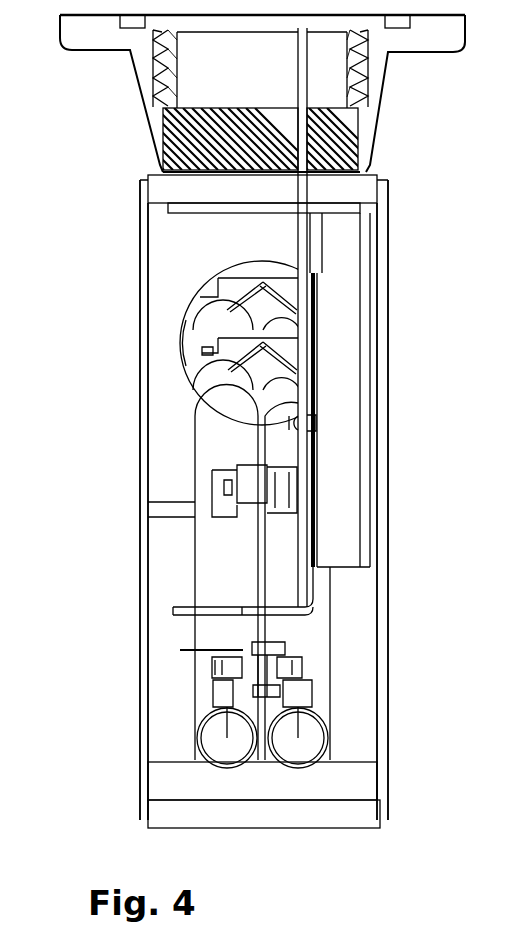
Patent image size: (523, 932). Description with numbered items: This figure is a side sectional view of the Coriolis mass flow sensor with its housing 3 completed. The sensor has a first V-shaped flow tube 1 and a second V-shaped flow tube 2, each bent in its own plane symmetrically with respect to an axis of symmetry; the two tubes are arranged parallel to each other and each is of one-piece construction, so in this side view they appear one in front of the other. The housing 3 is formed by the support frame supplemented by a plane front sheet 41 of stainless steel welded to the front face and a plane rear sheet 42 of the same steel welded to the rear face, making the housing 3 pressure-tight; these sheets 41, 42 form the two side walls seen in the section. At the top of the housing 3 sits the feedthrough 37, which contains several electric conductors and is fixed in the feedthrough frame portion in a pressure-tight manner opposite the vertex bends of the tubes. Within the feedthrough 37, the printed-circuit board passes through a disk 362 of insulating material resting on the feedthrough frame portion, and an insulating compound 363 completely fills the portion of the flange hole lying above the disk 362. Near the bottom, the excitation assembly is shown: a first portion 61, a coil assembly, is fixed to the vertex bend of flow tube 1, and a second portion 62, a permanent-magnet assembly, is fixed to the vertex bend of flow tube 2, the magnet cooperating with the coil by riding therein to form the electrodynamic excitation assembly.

The first V-shaped flow tube 1 is at (195, 567).
The second V-shaped flow tube 2 is at (330, 680).
The housing 3 is at (389, 197).
The feedthrough 37 is at (378, 161).
The front sheet 41 is at (145, 704).
The rear sheet 42 is at (383, 645).
The first portion of excitation assembly 61 is at (243, 650).
The second portion of excitation assembly 62 is at (325, 640).
The disk of insulating material 362 is at (163, 163).
The insulating compound 363 is at (360, 124).